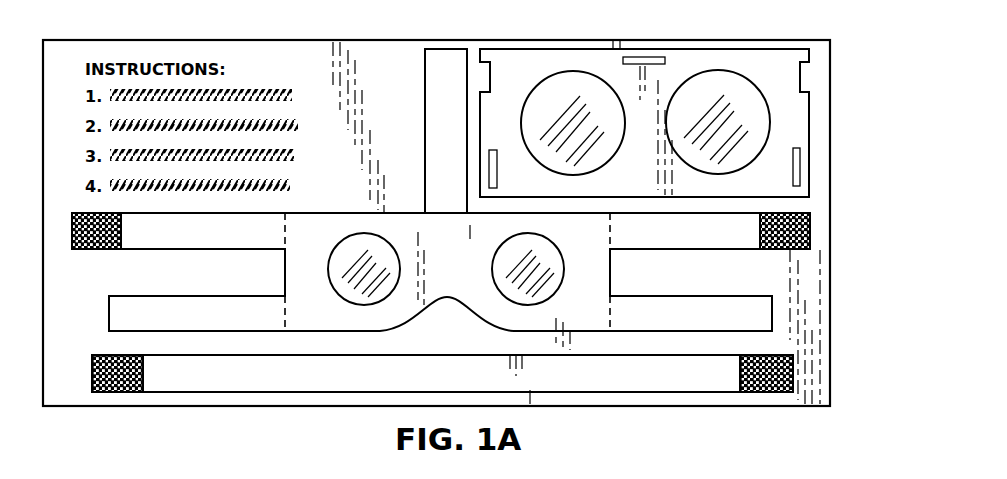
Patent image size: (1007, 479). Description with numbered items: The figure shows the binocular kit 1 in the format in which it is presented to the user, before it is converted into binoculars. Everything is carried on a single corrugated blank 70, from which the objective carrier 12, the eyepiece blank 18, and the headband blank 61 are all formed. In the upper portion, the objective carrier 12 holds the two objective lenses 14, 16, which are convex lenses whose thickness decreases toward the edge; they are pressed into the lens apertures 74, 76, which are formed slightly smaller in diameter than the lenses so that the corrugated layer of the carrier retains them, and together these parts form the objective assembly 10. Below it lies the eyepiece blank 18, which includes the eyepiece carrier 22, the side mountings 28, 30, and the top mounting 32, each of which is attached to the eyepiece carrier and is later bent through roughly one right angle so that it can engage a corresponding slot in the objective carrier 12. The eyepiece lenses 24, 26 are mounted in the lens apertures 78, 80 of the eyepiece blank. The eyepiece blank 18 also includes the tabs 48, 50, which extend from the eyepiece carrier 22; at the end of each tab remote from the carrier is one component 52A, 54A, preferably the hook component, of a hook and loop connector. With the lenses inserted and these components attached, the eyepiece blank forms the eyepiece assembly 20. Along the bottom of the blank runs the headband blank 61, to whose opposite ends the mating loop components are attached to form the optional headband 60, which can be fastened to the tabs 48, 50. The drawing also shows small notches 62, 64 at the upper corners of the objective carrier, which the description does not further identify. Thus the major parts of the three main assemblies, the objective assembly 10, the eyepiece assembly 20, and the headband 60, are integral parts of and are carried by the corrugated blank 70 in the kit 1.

The binocular kit 1 is at (143, 416).
The objective assembly 10 is at (809, 143).
The objective carrier 12 is at (718, 47).
The objective lens 14 is at (742, 95).
The objective lens 16 is at (552, 90).
The eyepiece blank 18 is at (773, 316).
The eyepiece assembly 20 is at (762, 258).
The eyepiece carrier 22 is at (352, 212).
The eyepiece lens 24 is at (552, 296).
The eyepiece lens 26 is at (337, 294).
The side mounting 28 is at (108, 305).
The side mounting 30 is at (777, 298).
The top mounting 32 is at (425, 88).
The tab 48 is at (190, 252).
The tab 50 is at (628, 250).
The hook component 52A is at (92, 252).
The hook component 54A is at (812, 224).
The headband 60 is at (668, 392).
The headband blank 61 is at (565, 393).
The left notch 62 is at (478, 62).
The right notch 64 is at (805, 78).
The corrugated blank 70 is at (785, 407).
The lens aperture 74 is at (568, 72).
The lens aperture 76 is at (692, 72).
The lens aperture 78 is at (338, 244).
The lens aperture 80 is at (500, 244).